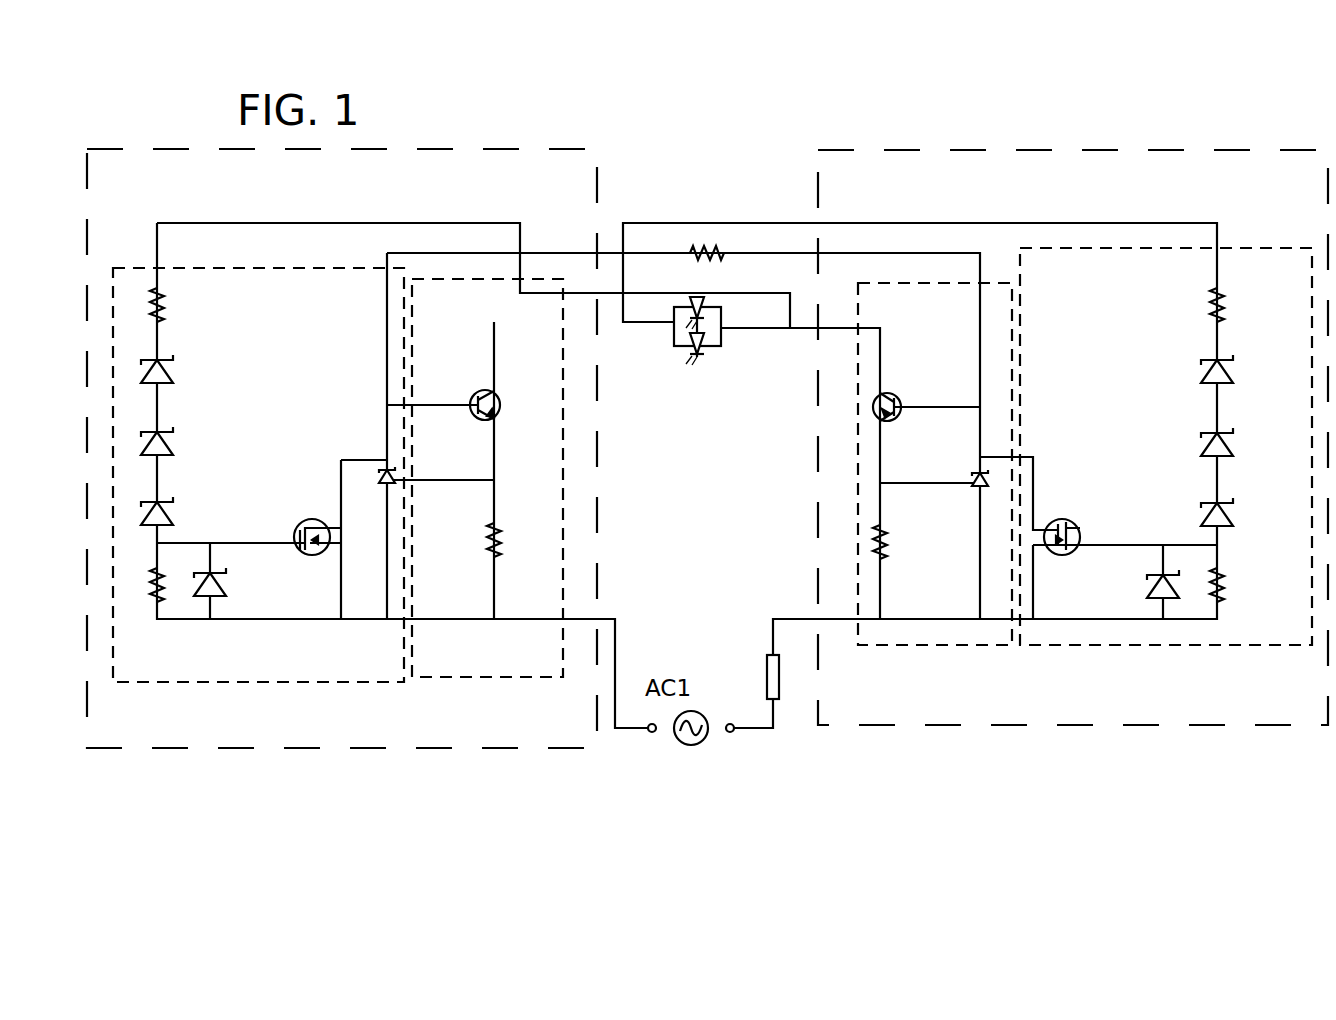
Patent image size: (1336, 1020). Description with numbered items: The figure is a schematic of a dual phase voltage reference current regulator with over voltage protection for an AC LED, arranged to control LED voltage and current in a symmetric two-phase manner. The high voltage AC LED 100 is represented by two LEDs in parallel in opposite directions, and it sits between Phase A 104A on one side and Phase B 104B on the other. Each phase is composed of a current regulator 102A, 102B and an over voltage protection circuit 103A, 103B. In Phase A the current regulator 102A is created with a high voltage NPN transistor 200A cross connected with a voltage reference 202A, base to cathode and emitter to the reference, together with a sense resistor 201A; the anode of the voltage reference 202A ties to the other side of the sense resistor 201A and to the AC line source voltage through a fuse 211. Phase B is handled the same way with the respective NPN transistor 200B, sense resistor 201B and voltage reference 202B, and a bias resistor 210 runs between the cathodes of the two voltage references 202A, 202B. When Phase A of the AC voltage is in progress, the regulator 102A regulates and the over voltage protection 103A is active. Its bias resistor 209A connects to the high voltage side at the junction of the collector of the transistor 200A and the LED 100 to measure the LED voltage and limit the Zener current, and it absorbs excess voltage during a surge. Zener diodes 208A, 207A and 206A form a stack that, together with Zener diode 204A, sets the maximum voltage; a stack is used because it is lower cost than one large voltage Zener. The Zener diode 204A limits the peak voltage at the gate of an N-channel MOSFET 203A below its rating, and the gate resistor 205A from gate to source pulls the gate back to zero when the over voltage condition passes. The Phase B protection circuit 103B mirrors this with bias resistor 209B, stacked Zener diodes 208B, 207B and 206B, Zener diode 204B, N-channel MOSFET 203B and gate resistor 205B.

The high voltage AC LED 100 is at (707, 364).
The current regulator 102A is at (533, 678).
The current regulator 102B is at (858, 650).
The over voltage protection circuit 103A is at (282, 685).
The over voltage protection circuit 103B is at (1082, 648).
The Phase A 104A is at (400, 752).
The Phase B 104B is at (992, 725).
The high voltage NPN transistor 200A is at (482, 419).
The high voltage NPN transistor 200B is at (890, 395).
The sense resistor 201A is at (488, 535).
The sense resistor 201B is at (910, 545).
The voltage reference 202A is at (380, 478).
The voltage reference 202B is at (975, 475).
The N-channel MOSFET 203A is at (300, 525).
The N-channel MOSFET 203B is at (1050, 522).
The Zener diode 204A is at (226, 587).
The Zener diode 204B is at (1150, 584).
The gate resistor 205A is at (152, 580).
The gate resistor 205B is at (1222, 590).
The Zener diode 206A is at (185, 516).
The Zener diode 206B is at (1227, 520).
The Zener diode 207A is at (166, 440).
The Zener diode 207B is at (1226, 450).
The Zener diode 208A is at (188, 376).
The Zener diode 208B is at (1228, 378).
The bias resistor for OVP 209A is at (165, 312).
The bias resistor for OVP 209B is at (1225, 312).
The bias resistor for current regulators 210 is at (708, 262).
The fuse 211 is at (767, 677).